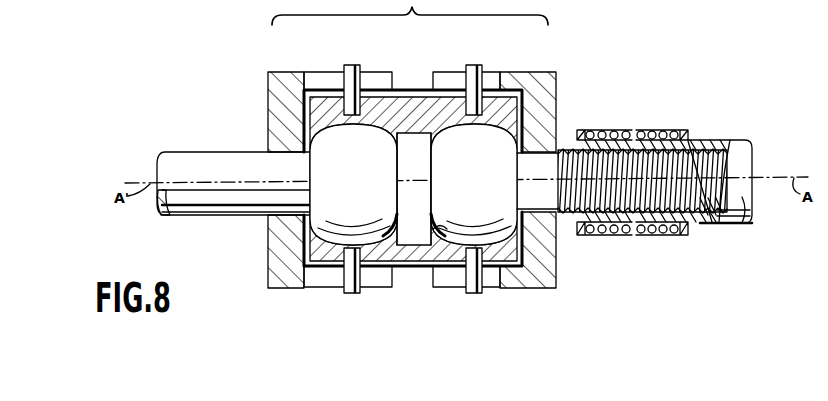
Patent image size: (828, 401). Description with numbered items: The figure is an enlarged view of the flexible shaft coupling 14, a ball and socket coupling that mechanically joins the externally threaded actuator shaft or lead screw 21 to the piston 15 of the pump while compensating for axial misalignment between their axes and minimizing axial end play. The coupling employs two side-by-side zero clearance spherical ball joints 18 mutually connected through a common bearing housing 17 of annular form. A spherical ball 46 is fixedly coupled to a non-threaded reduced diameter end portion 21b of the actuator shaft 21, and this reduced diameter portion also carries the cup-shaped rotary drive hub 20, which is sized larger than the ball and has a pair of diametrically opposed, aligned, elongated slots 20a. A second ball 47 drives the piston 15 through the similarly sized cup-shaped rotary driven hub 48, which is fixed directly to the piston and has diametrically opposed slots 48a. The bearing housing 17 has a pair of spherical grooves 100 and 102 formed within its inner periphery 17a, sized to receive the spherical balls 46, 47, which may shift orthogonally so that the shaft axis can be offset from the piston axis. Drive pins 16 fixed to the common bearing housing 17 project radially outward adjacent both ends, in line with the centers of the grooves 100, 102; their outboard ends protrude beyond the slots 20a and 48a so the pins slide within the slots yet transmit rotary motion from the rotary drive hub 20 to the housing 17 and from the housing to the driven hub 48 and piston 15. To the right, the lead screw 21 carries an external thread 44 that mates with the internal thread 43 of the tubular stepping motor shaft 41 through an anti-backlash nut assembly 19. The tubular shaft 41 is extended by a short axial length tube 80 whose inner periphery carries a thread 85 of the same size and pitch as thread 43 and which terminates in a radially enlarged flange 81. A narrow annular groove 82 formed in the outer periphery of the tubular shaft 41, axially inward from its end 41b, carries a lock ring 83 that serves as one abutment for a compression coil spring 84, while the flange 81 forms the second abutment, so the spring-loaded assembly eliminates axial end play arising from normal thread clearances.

The flexible shaft coupling 14 is at (410, 12).
The piston 15 is at (210, 197).
The drive pins 16 is at (346, 70).
The common bearing housing 17 is at (405, 270).
The inner periphery 17a is at (422, 136).
The spherical ball joints 18 is at (330, 147).
The anti-backlash nut assembly 19 is at (676, 165).
The rotary drive hub 20 is at (543, 296).
The elongated slots 20a is at (447, 82).
The actuator shaft or lead screw 21 is at (690, 175).
The reduced diameter end portion 21b is at (527, 178).
The tubular shaft 41 is at (733, 199).
The end of tubular shaft 41b is at (640, 236).
The internal thread 43 is at (720, 153).
The external thread 44 is at (725, 223).
The spherical ball 46 is at (464, 173).
The second ball 47 is at (371, 173).
The rotary driven hub 48 is at (287, 273).
The slots 48a is at (374, 82).
The short axial length tube 80 is at (618, 234).
The radially enlarged flange 81 is at (580, 128).
The annular groove 82 is at (690, 140).
The lock ring 83 is at (682, 128).
The compression coil spring 84 is at (615, 128).
The thread 85 is at (587, 206).
The spherical groove 100 is at (437, 228).
The spherical groove 102 is at (397, 208).